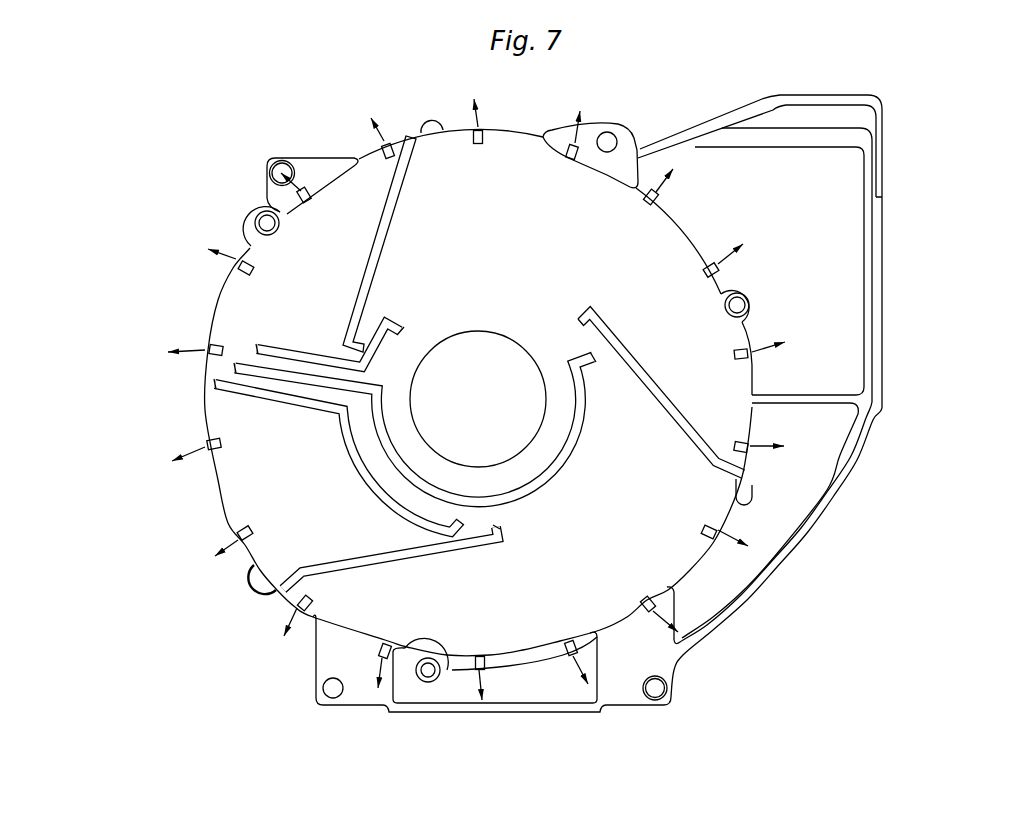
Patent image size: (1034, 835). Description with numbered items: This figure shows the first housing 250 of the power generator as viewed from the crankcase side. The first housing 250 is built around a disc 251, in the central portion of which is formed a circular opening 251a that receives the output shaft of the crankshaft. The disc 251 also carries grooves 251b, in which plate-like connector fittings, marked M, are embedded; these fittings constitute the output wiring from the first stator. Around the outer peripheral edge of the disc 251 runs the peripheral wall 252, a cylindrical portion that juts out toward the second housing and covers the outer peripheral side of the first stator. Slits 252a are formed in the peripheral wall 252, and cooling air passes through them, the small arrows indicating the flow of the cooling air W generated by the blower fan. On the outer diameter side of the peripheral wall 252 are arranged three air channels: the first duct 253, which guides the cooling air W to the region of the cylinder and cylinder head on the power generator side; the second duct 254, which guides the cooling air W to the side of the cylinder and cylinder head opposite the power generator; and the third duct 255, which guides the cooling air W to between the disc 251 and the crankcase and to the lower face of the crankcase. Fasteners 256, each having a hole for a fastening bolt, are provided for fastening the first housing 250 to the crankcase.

The first housing 250 is at (170, 146).
The disc 251 is at (279, 312).
The opening 251a is at (505, 404).
The grooves 251b is at (358, 470).
The peripheral wall 252 is at (205, 411).
The slits 252a is at (248, 537).
The first duct 253 is at (878, 178).
The second duct 254 is at (833, 493).
The third duct 255 is at (538, 712).
The fastener 256 is at (292, 155).
The cooling air W is at (476, 386).